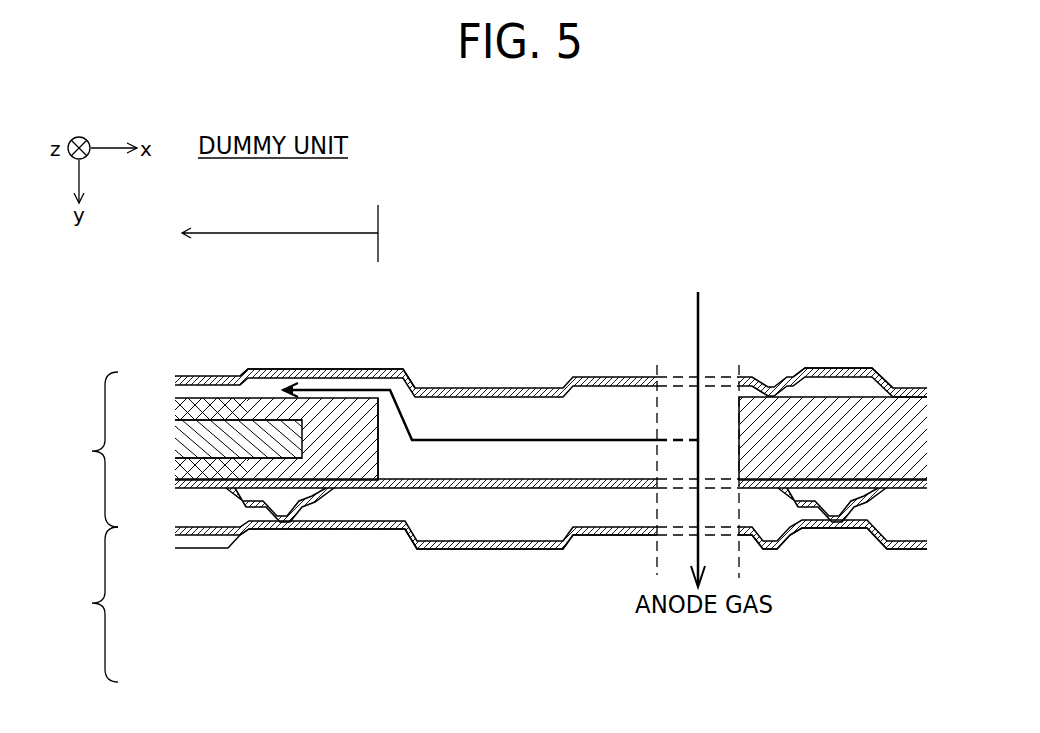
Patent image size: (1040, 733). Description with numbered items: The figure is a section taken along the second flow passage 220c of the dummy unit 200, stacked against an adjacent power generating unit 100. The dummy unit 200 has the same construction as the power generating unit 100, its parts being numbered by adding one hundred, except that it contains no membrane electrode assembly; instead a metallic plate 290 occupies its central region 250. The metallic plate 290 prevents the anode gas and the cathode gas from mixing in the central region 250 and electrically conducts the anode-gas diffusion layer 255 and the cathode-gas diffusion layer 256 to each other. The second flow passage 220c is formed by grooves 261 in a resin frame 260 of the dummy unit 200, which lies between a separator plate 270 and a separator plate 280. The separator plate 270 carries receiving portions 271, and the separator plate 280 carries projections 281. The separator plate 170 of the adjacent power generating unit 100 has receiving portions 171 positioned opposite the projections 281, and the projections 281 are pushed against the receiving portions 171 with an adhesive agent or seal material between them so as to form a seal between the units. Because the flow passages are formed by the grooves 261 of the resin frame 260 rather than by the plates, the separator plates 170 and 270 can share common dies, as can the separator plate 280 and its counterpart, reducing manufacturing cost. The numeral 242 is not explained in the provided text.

The power generating unit 100 is at (86, 604).
The dummy unit 200 is at (86, 449).
The separator plate 170 is at (922, 552).
The receiving portions 171 is at (308, 538).
The second flow passage 220c is at (528, 433).
The cut-out portion 242 is at (657, 423).
The central region 250 is at (257, 233).
The anode-gas diffusion layer 255 is at (201, 405).
The cathode-gas diffusion layer 256 is at (205, 470).
The resin frame 260 is at (880, 457).
The grooves 261 is at (380, 461).
The separator plate 270 is at (918, 388).
The receiving portions 271 is at (347, 362).
The separator plate 280 is at (917, 489).
The projections 281 is at (318, 515).
The metallic plate 290 is at (250, 452).